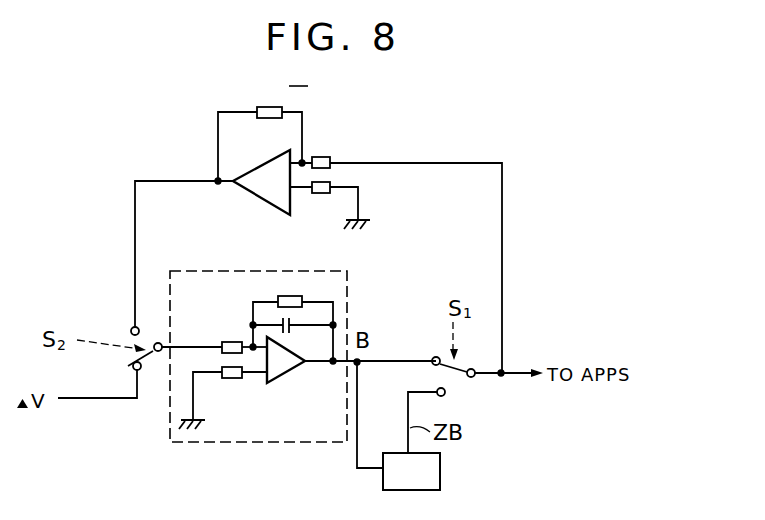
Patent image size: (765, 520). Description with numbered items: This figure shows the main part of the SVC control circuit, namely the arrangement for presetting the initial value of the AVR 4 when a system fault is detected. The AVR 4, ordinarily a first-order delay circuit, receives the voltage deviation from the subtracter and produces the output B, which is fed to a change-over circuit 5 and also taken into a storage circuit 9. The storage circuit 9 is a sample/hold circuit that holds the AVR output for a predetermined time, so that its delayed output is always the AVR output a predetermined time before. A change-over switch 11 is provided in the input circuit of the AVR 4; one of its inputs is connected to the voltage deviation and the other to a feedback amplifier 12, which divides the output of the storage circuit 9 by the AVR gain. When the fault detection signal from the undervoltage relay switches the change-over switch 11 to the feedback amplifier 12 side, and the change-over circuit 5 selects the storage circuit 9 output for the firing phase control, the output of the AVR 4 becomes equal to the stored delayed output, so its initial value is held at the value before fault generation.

The AVR 4 is at (348, 288).
The change-over circuit 5 is at (457, 382).
The storage circuit 9 is at (440, 474).
The change-over switch 11 is at (132, 328).
The feedback amplifier 12 is at (258, 202).